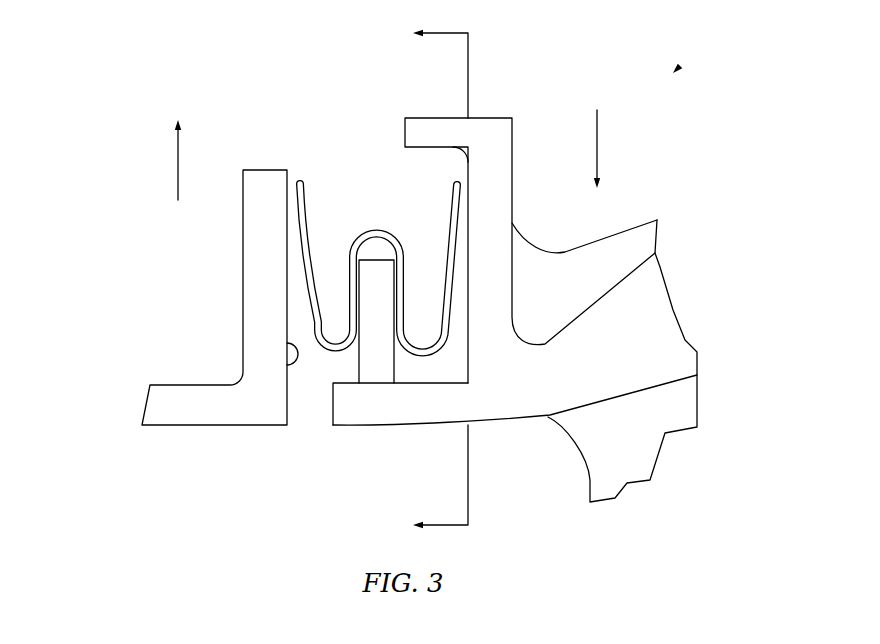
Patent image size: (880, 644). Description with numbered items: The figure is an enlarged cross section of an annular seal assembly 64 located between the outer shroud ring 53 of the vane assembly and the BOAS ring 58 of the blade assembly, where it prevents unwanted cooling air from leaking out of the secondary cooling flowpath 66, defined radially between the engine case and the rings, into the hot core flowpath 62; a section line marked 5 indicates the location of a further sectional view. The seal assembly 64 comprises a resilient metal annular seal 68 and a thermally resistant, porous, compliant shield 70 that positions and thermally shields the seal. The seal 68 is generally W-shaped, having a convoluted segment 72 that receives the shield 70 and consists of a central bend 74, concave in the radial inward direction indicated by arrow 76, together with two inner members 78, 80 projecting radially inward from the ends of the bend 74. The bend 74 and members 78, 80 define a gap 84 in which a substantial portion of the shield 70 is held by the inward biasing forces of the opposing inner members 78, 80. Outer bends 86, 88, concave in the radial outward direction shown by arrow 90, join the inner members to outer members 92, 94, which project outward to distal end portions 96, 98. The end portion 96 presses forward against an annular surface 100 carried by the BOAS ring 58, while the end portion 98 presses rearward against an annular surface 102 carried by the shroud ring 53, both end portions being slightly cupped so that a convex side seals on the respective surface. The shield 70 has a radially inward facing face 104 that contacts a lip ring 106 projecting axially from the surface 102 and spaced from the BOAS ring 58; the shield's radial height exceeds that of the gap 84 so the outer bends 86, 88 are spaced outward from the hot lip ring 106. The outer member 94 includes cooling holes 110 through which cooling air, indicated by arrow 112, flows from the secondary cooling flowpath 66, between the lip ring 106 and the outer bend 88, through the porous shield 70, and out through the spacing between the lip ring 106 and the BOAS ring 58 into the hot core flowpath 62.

The section line 5- 5 is at (430, 281).
The outer shroud ring 53 is at (548, 428).
The BOAS ring 58 is at (195, 433).
The hot core flowpath 62 is at (326, 540).
The seal assembly 64 is at (676, 70).
The secondary cooling flowpath 66 is at (321, 83).
The annular seal 68 is at (303, 221).
The shield 70 is at (400, 371).
The convoluted segment 72 is at (396, 250).
The central bend 74 is at (374, 250).
The radial inward direction 76 is at (598, 138).
The inner member 78 is at (356, 270).
The inner member 80 is at (443, 290).
The gap 84 is at (350, 250).
The outer bend 86 is at (345, 360).
The outer bend 88 is at (424, 366).
The radial outward direction 90 is at (178, 172).
The outer member 92 is at (304, 292).
The outer member 94 is at (446, 302).
The end portion 96 is at (300, 203).
The end portion 98 is at (447, 197).
The annular surface 100 is at (290, 362).
The annular surface 102 is at (447, 120).
The radially inward facing face 104 is at (381, 386).
The lip ring 106 is at (358, 414).
The cooling holes 110 is at (512, 223).
The cooling air flow 112 is at (309, 391).